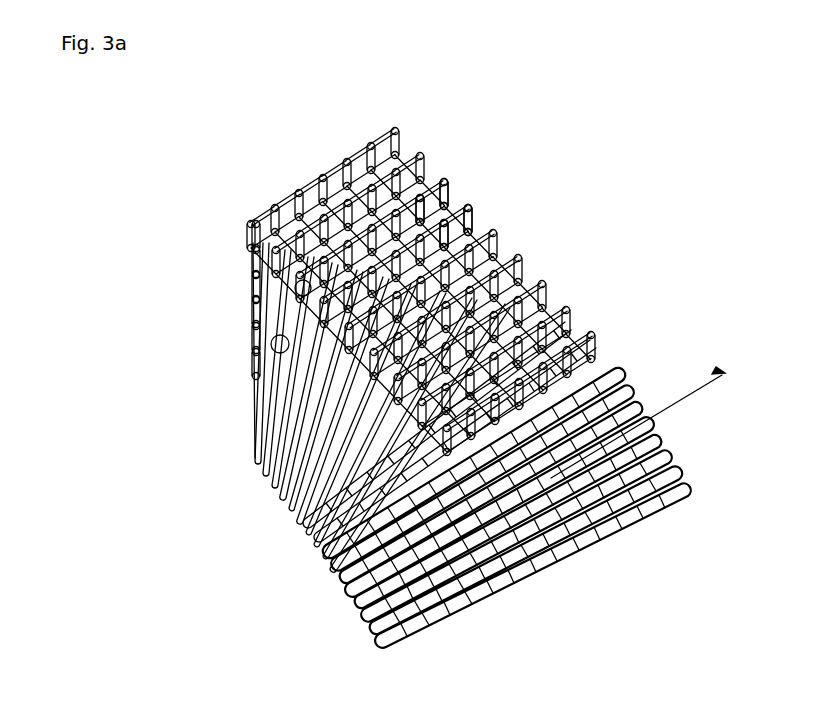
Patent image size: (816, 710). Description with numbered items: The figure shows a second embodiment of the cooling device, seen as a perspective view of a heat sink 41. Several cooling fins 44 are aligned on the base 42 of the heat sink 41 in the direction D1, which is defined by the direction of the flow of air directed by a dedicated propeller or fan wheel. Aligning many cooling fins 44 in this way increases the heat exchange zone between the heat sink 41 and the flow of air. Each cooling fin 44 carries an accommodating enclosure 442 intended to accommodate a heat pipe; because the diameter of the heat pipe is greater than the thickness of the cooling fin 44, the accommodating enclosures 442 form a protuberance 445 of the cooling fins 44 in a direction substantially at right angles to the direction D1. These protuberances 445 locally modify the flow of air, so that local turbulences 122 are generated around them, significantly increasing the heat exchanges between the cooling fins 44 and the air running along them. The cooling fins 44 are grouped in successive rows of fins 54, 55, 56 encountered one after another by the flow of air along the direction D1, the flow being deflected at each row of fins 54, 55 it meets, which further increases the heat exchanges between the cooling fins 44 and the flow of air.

The heat sink 41 is at (194, 228).
The base 42 is at (250, 453).
The cooling fins 44 is at (320, 540).
The accommodating enclosure 442 is at (305, 190).
The protuberance 445 is at (455, 177).
The local turbulences 122 is at (263, 336).
The row of fins 54 is at (427, 622).
The row of fins 55 is at (527, 595).
The third fiber group 56 is at (618, 550).
The direction D1 is at (638, 414).